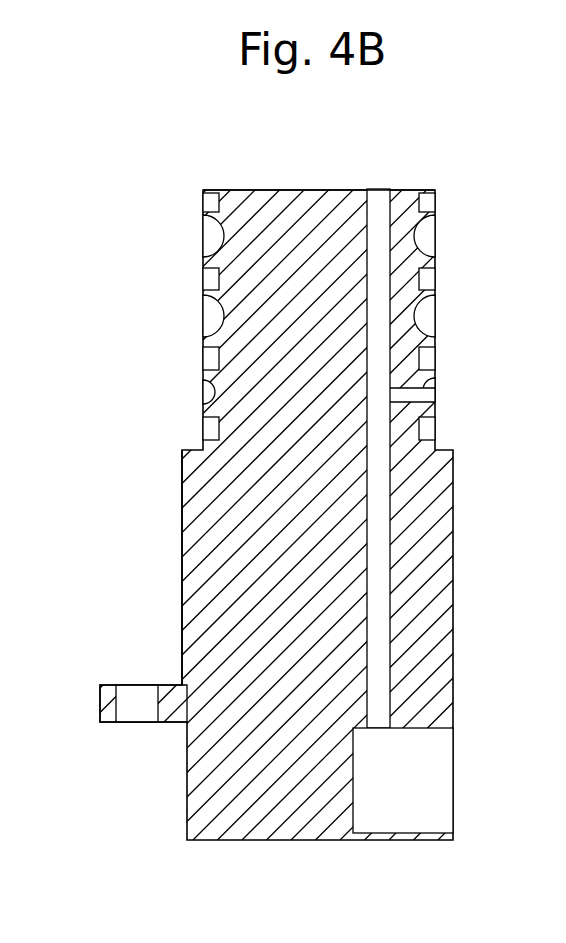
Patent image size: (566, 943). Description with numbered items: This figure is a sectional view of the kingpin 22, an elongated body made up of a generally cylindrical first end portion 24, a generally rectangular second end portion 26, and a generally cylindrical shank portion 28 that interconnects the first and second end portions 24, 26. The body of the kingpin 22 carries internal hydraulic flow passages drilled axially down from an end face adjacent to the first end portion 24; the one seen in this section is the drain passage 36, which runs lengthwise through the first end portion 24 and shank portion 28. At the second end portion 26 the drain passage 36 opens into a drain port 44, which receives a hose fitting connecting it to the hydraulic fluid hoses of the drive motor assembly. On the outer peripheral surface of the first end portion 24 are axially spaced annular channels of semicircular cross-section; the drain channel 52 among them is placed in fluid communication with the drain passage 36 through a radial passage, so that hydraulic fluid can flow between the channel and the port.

The kingpin 22 is at (176, 492).
The first end portion 24 is at (435, 293).
The second end portion 26 is at (187, 785).
The shank portion 28 is at (188, 568).
The drain passage 36 is at (382, 671).
The drain port 44 is at (415, 785).
The drain channel 52 is at (435, 390).